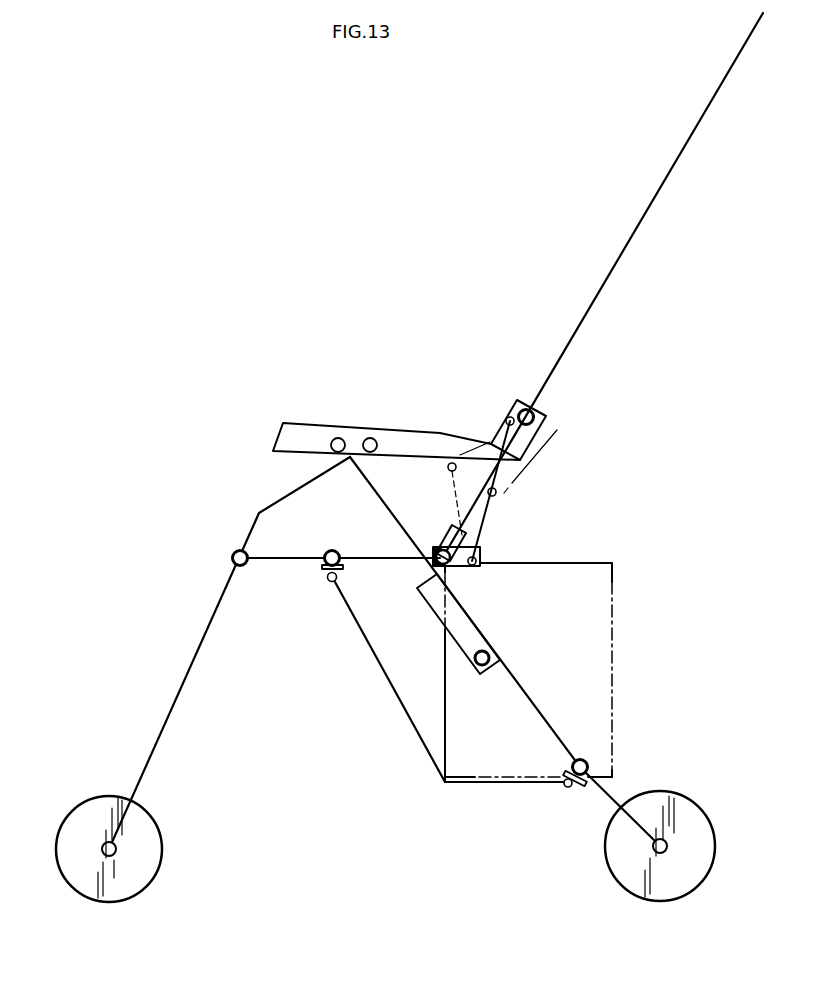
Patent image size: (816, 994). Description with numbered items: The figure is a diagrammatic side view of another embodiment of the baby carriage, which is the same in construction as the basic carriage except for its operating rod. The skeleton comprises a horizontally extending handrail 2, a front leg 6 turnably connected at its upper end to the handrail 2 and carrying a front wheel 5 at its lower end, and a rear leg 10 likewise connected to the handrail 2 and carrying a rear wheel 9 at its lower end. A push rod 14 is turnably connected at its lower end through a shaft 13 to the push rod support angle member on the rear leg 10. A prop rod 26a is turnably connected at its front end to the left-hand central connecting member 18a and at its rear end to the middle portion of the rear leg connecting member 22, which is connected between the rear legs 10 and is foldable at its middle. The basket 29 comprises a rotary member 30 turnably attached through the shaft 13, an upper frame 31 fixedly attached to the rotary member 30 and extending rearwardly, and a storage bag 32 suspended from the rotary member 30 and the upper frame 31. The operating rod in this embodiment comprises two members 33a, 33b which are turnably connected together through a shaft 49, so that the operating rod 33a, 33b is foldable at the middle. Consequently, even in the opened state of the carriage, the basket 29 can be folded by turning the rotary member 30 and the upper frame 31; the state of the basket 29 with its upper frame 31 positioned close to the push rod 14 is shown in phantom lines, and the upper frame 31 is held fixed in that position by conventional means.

The handrail 2 is at (386, 432).
The front wheel 5 is at (110, 795).
The front leg 6 is at (203, 640).
The rear wheel 9 is at (648, 790).
The rear leg 10 is at (552, 743).
The shaft 13 is at (437, 546).
The push rod 14 is at (645, 219).
The central connecting member 18a is at (348, 572).
The rear leg connecting member 22 is at (583, 790).
The prop rod 26a is at (386, 680).
The basket 29 is at (622, 562).
The rotary member 30 is at (482, 553).
The upper frame 31 is at (557, 432).
The storage bag 32 is at (612, 580).
The operating rod member 33a is at (445, 492).
The operating rod member 33b is at (483, 450).
The shaft 49 is at (500, 494).